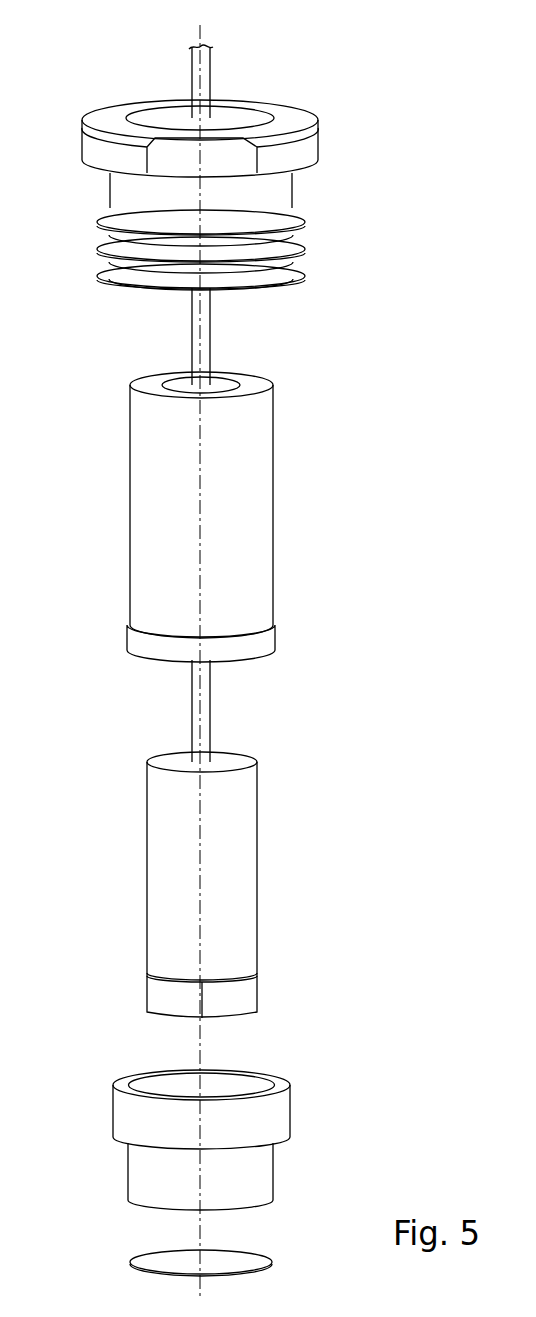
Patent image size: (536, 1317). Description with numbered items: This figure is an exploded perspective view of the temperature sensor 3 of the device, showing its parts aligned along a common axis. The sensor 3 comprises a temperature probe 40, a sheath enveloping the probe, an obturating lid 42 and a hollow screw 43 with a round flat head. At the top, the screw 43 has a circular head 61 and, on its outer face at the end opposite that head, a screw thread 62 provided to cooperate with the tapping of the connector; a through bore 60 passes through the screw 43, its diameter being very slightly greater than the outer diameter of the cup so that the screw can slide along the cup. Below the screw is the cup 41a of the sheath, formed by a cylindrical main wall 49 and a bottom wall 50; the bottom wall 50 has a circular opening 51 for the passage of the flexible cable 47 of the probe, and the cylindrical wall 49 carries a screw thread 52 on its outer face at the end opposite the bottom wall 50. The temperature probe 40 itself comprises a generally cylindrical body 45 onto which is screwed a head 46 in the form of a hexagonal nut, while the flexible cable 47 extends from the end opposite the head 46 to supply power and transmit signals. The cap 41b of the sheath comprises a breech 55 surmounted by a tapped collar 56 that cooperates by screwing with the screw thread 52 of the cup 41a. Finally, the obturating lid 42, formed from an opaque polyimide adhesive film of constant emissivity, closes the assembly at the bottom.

The sensor 3 is at (421, 86).
The hollow screw 43 is at (343, 212).
The through bore 60 is at (231, 116).
The circular head 61 is at (317, 122).
The screw thread 62 is at (302, 246).
The cup 41a is at (343, 469).
The flexible cable 47 is at (207, 708).
The cylindrical main wall 49 is at (140, 438).
The bottom wall 50 is at (262, 385).
The circular opening 51 is at (224, 383).
The screw thread 52 is at (265, 640).
The temperature probe 40 is at (295, 851).
The cylindrical body 45 is at (248, 937).
The head 46 is at (248, 995).
The cap 41b is at (343, 1147).
The tapped collar 56 is at (118, 1113).
The breech 55 is at (137, 1173).
The obturating lid 42 is at (255, 1263).